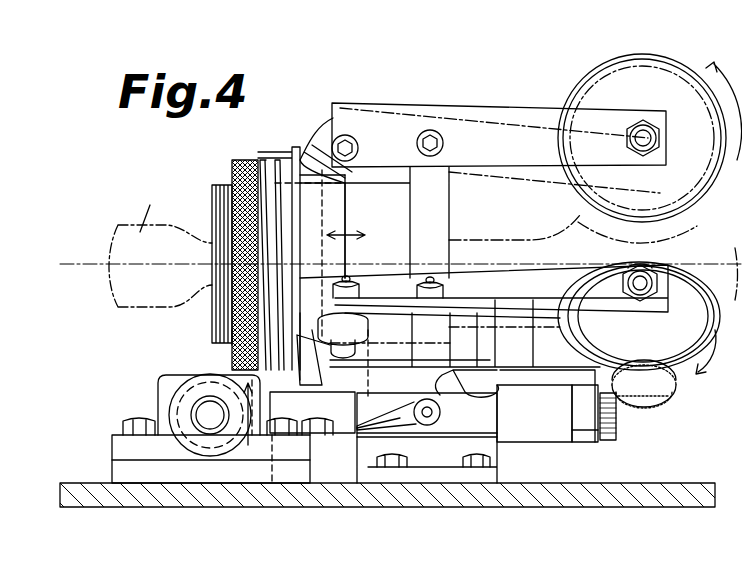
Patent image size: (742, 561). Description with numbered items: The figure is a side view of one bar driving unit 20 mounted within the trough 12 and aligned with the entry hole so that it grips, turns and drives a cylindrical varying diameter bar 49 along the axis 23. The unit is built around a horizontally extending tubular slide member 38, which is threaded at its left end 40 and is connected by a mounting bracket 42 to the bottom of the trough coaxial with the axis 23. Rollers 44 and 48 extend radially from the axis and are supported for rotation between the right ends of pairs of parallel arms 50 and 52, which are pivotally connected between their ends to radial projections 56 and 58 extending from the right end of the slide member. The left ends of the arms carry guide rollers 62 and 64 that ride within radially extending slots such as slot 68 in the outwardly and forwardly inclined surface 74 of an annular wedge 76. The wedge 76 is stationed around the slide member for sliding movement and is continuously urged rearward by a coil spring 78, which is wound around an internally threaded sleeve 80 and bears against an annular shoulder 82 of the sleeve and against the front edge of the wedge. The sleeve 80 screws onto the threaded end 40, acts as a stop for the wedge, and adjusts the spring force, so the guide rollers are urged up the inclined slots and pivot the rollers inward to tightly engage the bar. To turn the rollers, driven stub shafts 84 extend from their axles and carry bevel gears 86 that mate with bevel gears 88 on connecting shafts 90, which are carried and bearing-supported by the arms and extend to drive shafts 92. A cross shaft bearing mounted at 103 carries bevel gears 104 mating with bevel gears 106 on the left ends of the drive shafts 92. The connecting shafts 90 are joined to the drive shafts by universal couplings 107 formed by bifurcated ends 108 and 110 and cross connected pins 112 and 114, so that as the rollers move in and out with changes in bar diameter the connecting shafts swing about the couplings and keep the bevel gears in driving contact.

The trough 12 is at (655, 483).
The bar driving unit 20 is at (529, 93).
The axis 23 is at (100, 247).
The tubular slide member 38 is at (370, 190).
The threaded left end 40 is at (215, 185).
The mounting bracket 42 is at (480, 430).
The roller 44 is at (712, 355).
The roller 48 is at (684, 70).
The varying diameter bar 49 is at (144, 209).
The pair of parallel arms 50 is at (485, 312).
The pair of parallel arms 52 is at (503, 158).
The radial projection 56 is at (450, 350).
The radial projection 58 is at (447, 168).
The guide roller 62 is at (362, 335).
The guide roller 64 is at (312, 130).
The radially extending slot 68 is at (302, 393).
The outwardly and forwardly inclined surface 74 is at (345, 220).
The annular wedge 76 is at (294, 148).
The coil spring 78 is at (245, 160).
The internally threaded sleeve 80 is at (270, 362).
The annular shoulder 82 is at (232, 328).
The driven stub shaft 84 is at (650, 405).
The bevel gear 86 is at (630, 410).
The bevel gear 88 is at (608, 442).
The connecting shaft 90 is at (580, 442).
The drive shaft 92 is at (412, 425).
The bearing mounting 103 is at (158, 448).
The bevel gear 104 is at (211, 450).
The bevel gear 106 is at (228, 462).
The universal coupling 107 is at (412, 420).
The bifurcated end 108 is at (440, 455).
The bifurcated end 110 is at (446, 383).
The cross connected pin 112 is at (415, 404).
The cross connected pin 114 is at (441, 412).